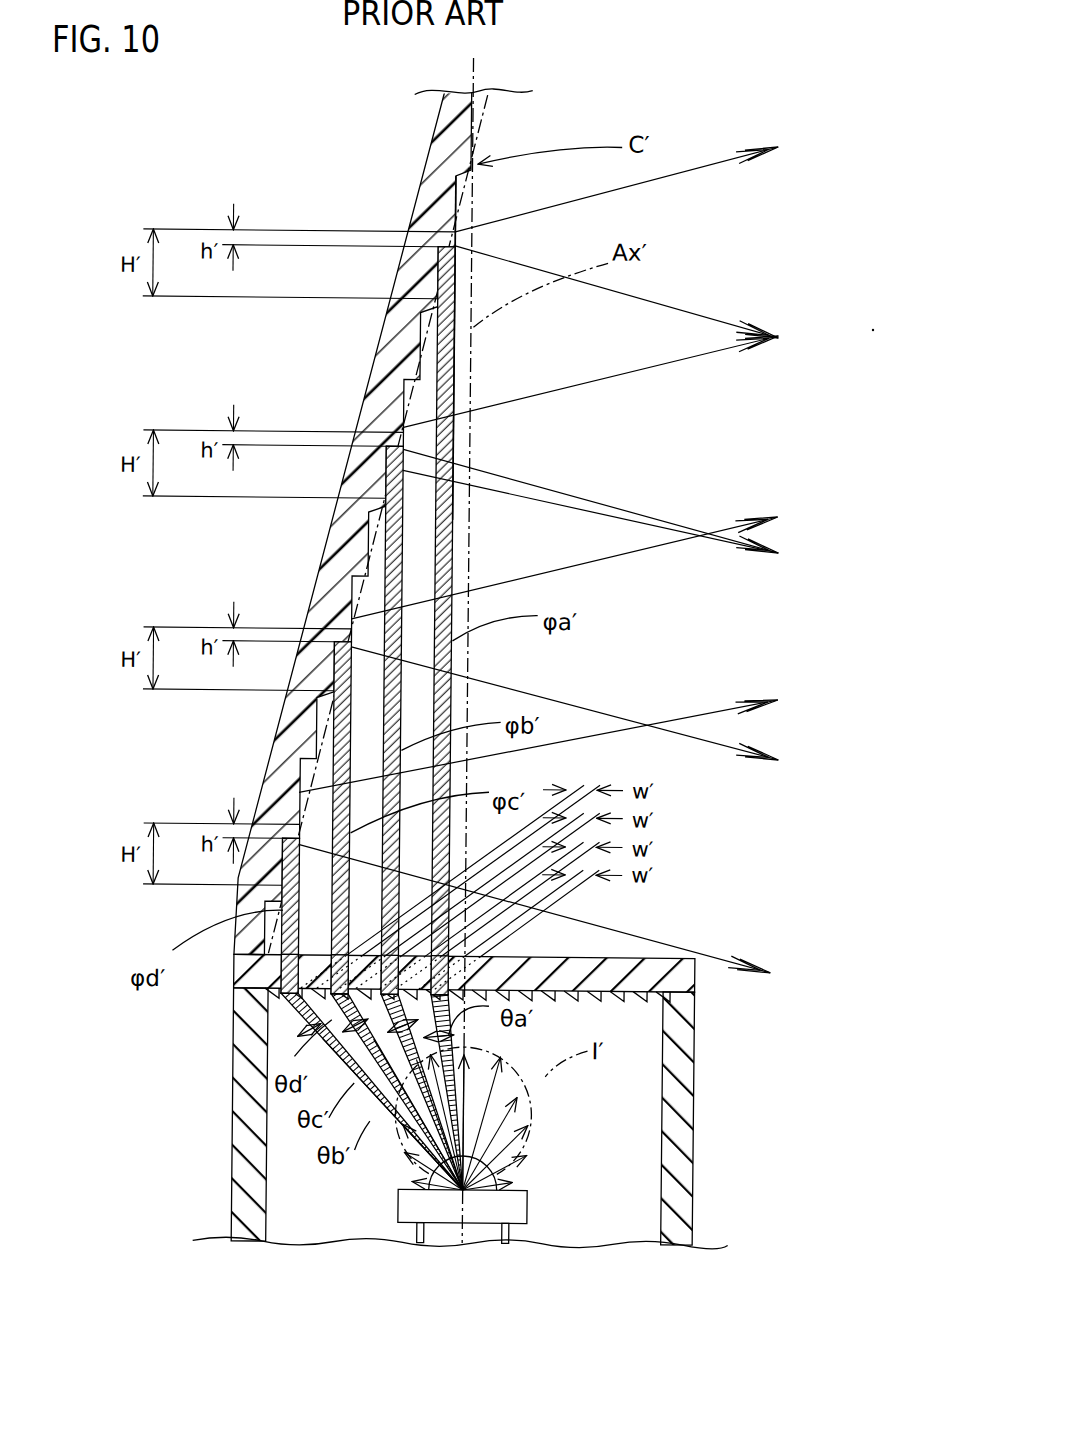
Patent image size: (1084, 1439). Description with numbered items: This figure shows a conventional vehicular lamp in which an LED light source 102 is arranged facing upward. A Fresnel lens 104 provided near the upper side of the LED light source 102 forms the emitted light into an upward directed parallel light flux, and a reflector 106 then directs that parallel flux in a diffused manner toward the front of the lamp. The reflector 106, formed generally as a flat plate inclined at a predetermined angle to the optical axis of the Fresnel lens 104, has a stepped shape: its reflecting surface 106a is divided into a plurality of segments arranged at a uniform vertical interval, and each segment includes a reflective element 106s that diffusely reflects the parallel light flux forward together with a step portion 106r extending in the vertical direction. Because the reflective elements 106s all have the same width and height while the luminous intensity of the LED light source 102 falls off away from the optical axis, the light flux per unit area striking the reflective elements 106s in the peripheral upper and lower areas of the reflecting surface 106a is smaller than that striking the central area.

The LED light source 102 is at (502, 1176).
The Fresnel lens 104 is at (613, 972).
The reflector 106 is at (314, 549).
The reflecting surface 106a is at (446, 376).
The reflective element 106s is at (446, 447).
The step portion 106r is at (446, 470).